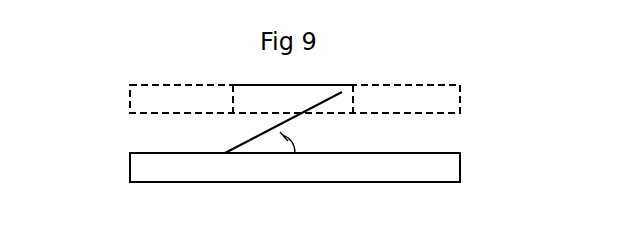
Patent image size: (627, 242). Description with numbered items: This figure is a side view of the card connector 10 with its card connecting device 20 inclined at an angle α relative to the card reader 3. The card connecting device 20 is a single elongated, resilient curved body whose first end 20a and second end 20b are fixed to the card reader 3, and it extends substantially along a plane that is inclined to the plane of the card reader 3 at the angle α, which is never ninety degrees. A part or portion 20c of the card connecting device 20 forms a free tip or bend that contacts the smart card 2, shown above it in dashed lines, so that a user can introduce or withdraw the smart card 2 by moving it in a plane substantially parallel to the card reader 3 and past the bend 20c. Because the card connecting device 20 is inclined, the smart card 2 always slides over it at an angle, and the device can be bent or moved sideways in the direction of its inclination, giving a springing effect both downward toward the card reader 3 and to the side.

The card connector 10 is at (321, 135).
The smart card 2 is at (336, 104).
The card reader 3 is at (410, 169).
The card connecting device 20 is at (195, 163).
The first end 20a is at (191, 187).
The second end 20b is at (245, 133).
The bend 20c is at (345, 84).